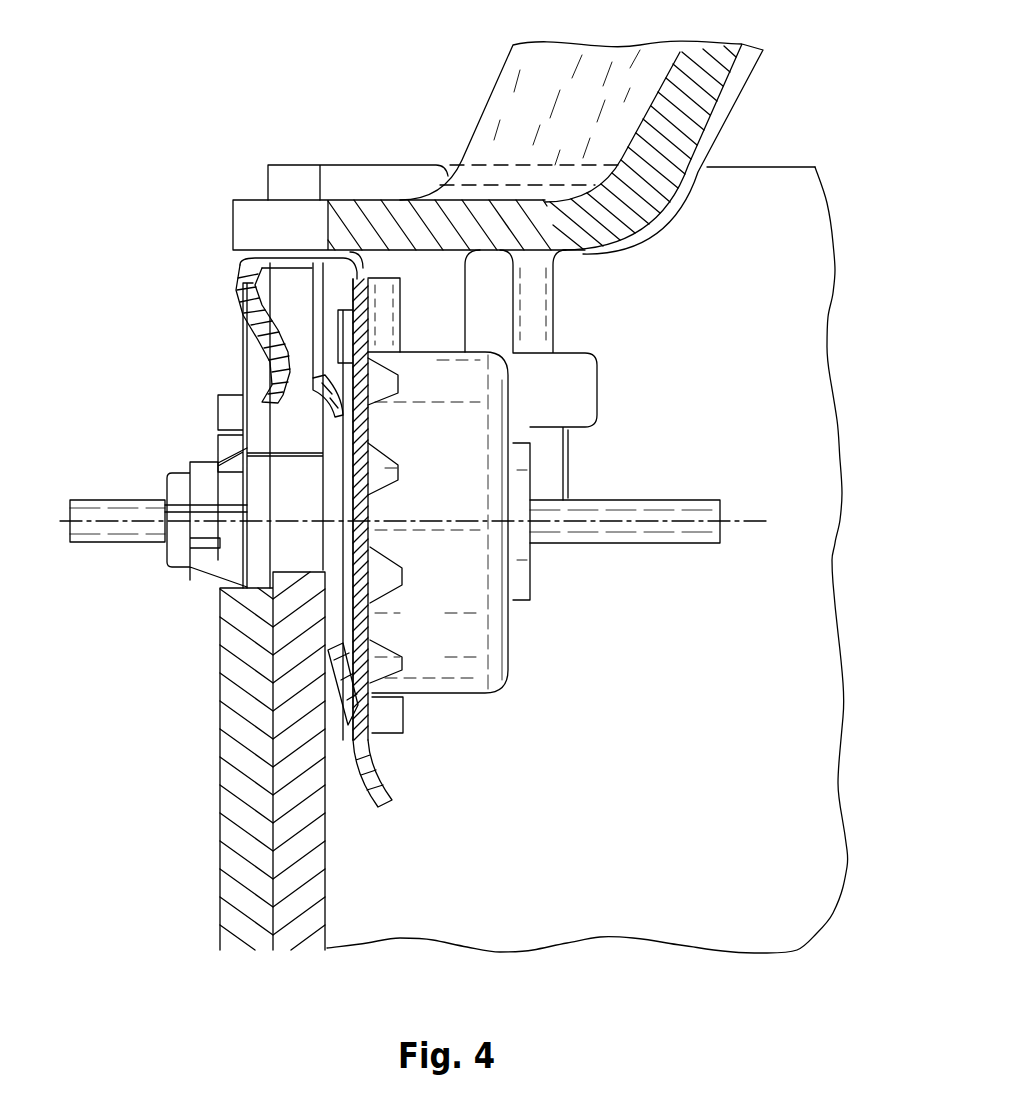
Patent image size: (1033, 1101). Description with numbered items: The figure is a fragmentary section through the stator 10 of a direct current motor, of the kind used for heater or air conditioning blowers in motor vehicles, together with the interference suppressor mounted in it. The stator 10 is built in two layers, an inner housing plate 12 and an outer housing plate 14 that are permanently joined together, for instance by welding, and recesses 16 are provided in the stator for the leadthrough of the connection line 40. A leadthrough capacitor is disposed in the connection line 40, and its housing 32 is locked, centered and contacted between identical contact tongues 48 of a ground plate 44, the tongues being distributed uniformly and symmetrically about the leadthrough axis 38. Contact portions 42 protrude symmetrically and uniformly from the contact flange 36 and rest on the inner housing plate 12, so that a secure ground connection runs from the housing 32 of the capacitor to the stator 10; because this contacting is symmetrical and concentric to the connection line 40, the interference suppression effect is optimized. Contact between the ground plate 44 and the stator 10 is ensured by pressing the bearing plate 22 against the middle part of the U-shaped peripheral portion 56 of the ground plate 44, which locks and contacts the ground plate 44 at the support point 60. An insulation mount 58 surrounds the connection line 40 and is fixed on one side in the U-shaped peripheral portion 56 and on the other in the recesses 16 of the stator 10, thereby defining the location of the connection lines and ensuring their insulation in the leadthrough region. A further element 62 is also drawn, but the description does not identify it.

The stator 10 is at (357, 120).
The inner housing plate 12 is at (295, 183).
The outer housing plate 14 is at (247, 724).
The recesses 16 is at (188, 418).
The bearing plate 22 is at (740, 121).
The housing 32 is at (463, 377).
The contact flange 36 is at (348, 332).
The leadthrough axis 38 is at (73, 517).
The connection line 40 is at (116, 510).
The contact portions 42 is at (335, 670).
The ground plate 44 is at (363, 310).
The contact tongues 48 is at (387, 470).
The U-shaped peripheral portion 56 is at (245, 283).
The insulation mount 58 is at (162, 555).
The support point 60 is at (290, 276).
The bent tab 62 is at (331, 740).